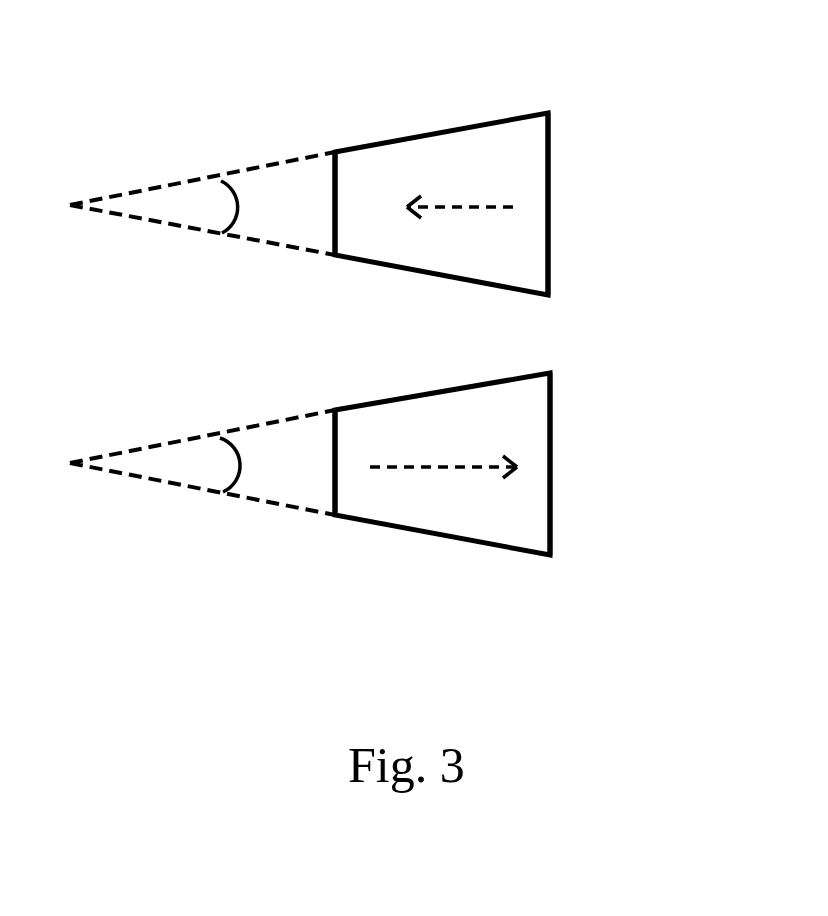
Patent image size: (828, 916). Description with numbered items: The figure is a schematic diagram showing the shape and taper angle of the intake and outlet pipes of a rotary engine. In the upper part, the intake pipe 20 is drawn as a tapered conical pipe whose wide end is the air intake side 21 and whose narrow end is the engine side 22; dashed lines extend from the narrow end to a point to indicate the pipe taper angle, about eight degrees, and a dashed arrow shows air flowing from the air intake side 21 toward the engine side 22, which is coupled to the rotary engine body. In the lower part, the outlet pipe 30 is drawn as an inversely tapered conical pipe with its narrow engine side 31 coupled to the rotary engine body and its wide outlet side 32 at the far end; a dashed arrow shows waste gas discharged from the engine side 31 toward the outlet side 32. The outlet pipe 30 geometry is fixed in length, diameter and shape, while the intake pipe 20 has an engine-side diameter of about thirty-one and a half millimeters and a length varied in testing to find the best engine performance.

The intake pipe 20 is at (435, 157).
The air intake side 21 is at (548, 211).
The engine side 22 is at (332, 185).
The outlet pipe 30 is at (435, 490).
The engine side 31 is at (335, 475).
The outlet side 32 is at (550, 457).